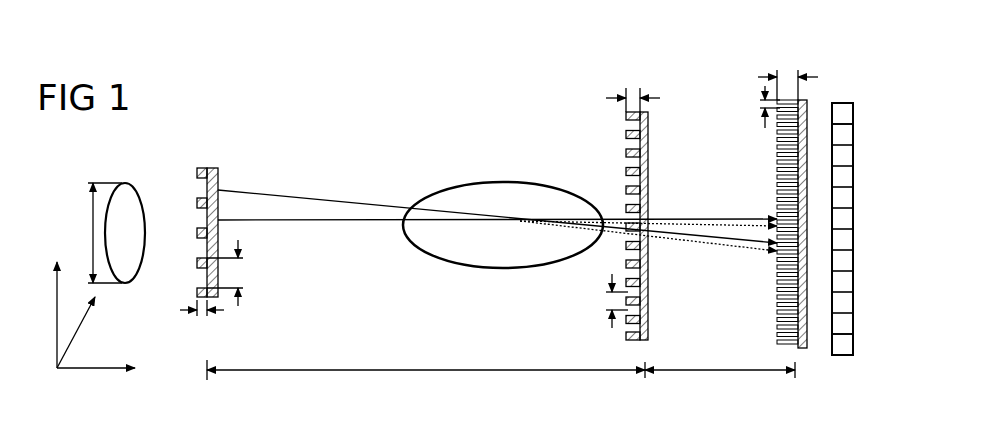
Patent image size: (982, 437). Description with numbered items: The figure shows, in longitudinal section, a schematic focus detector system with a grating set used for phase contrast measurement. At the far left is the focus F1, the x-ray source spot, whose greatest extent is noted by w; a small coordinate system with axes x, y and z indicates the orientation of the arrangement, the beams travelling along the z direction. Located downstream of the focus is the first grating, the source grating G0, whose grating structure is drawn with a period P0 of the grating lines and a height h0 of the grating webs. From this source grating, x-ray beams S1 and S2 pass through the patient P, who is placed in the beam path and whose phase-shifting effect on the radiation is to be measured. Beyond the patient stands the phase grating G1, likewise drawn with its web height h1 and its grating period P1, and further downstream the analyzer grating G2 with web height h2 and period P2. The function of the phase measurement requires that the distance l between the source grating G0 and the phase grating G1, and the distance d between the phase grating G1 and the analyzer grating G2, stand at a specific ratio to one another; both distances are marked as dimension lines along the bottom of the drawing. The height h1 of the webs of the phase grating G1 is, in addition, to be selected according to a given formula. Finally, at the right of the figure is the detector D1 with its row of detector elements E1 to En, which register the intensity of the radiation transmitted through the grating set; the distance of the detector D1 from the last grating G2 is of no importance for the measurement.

The focus F1 is at (132, 184).
The extent of the focus w is at (93, 232).
The x axis x is at (47, 310).
The y axis y is at (83, 332).
The z axis z is at (99, 381).
The source grating G0 is at (220, 172).
The height of the grating webs h0 is at (200, 316).
The period of the grating lines P0 is at (240, 276).
The x-ray beam S1 is at (332, 200).
The x-ray beam S2 is at (336, 224).
The patient P is at (500, 182).
The phase grating G1 is at (650, 154).
The height of the grating webs h1 is at (633, 96).
The period of the grating lines P1 is at (606, 305).
The distance between source grating and phase grating l is at (436, 370).
The distance between phase grating and analyzer grating d is at (727, 370).
The analyzer grating G2 is at (798, 350).
The height of the grating webs h2 is at (788, 74).
The period of the grating lines P2 is at (762, 108).
The detector D1 is at (845, 100).
The detector element E1 is at (840, 112).
The detector element En is at (843, 346).